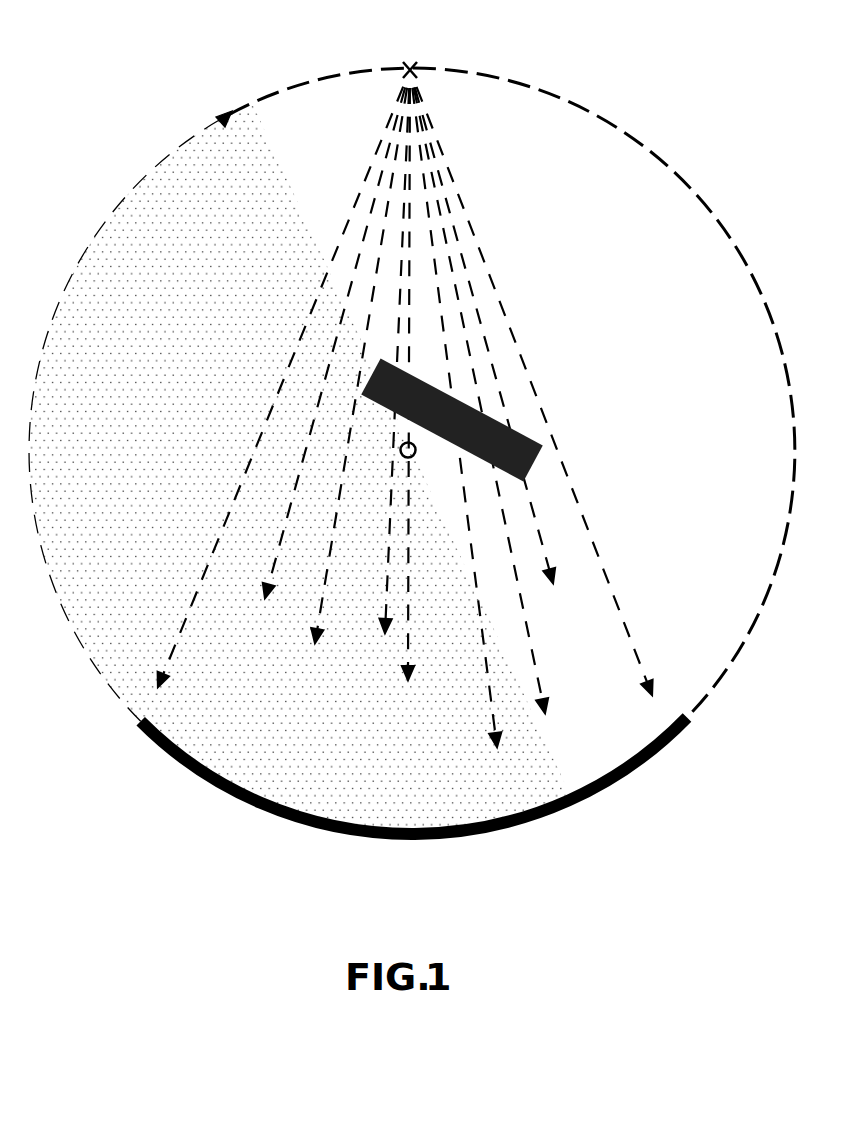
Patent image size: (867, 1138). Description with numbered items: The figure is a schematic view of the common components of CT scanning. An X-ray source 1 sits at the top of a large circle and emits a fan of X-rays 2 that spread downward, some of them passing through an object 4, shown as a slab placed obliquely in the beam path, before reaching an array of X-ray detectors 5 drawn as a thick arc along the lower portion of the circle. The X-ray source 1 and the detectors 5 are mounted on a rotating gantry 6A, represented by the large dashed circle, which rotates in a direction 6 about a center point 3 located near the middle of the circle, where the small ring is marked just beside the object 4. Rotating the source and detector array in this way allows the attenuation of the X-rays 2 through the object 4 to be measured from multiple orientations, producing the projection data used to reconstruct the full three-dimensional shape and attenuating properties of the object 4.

The X-ray source 1 is at (393, 45).
The X-rays 2 is at (405, 417).
The center point 3 is at (388, 449).
The object 4 is at (540, 452).
The array of X-ray detectors 5 is at (414, 776).
The direction of rotation 6 is at (300, 468).
The rotating gantry 6A is at (512, 392).